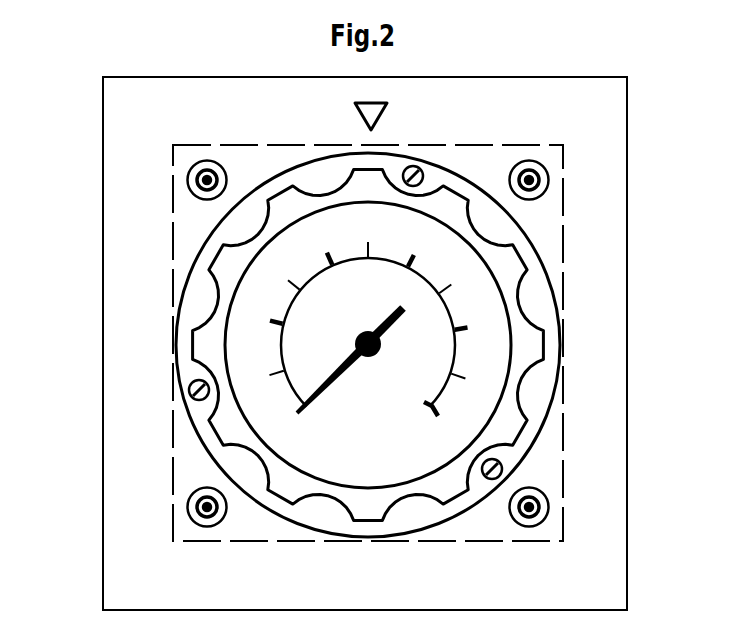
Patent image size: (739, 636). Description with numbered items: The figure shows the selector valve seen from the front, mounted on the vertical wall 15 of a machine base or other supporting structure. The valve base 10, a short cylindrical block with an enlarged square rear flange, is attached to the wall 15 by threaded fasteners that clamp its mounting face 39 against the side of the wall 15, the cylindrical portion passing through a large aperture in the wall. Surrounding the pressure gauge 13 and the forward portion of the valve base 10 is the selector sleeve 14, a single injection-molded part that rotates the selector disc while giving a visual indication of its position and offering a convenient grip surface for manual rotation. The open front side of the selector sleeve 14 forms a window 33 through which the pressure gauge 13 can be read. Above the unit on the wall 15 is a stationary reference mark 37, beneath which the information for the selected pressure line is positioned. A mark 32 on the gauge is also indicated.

The valve base 10 is at (562, 490).
The pressure gauge 13 is at (477, 332).
The selector sleeve 14 is at (545, 297).
The vertical wall 15 is at (148, 207).
The scale mark 32 is at (466, 374).
The window 33 is at (370, 481).
The stationary reference mark 37 is at (372, 115).
The mounting face 39 is at (540, 463).